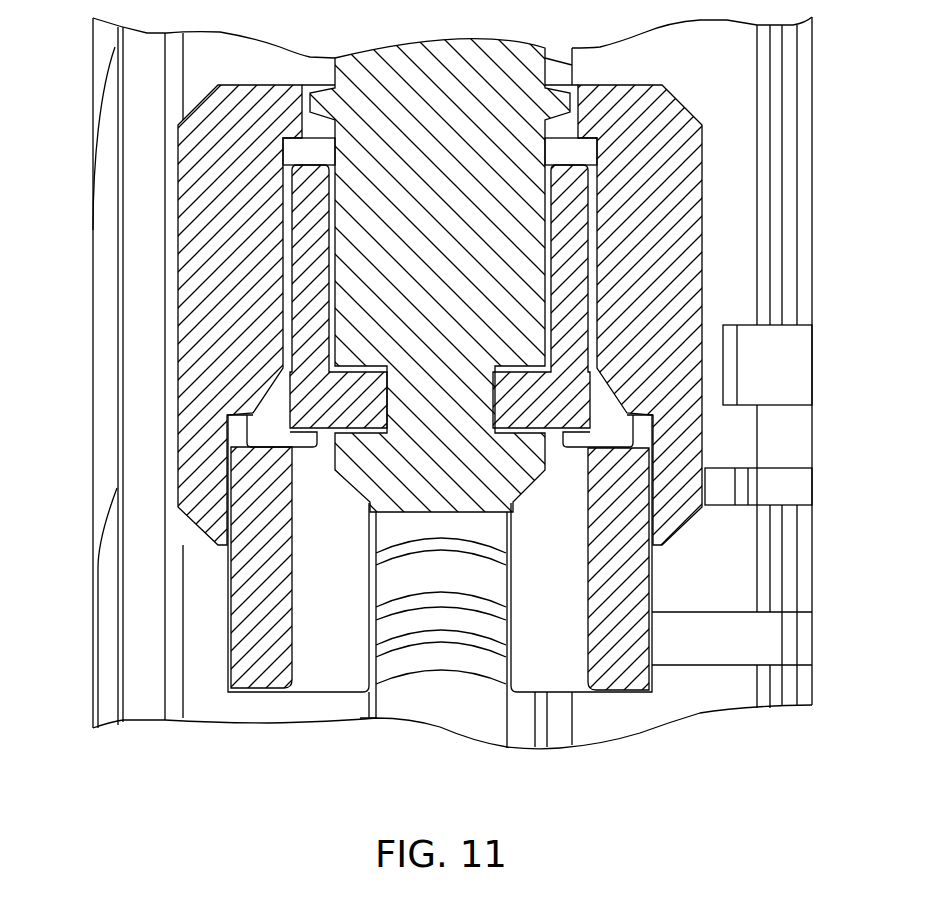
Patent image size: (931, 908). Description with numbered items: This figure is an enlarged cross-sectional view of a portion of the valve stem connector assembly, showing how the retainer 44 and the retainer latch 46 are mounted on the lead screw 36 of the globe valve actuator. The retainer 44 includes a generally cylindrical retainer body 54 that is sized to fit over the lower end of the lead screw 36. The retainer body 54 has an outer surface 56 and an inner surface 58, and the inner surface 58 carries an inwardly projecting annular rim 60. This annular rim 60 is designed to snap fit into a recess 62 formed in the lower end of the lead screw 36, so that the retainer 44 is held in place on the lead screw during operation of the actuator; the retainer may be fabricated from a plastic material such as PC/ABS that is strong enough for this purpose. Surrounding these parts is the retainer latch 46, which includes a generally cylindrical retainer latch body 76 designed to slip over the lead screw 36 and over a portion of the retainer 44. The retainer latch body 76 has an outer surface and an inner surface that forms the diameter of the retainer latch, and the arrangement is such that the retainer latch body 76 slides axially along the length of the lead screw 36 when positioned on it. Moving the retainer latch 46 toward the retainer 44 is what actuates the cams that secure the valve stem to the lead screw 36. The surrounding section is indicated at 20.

The housing 20 is at (140, 598).
The lead screw 36 is at (492, 240).
The retainer 44 is at (227, 600).
The retainer latch 46 is at (700, 117).
The retainer body 54 is at (630, 573).
The outer surface 56 is at (230, 660).
The inner surface 58 is at (293, 632).
The annular rim 60 is at (540, 403).
The recess 62 is at (368, 378).
The retainer latch body 76 is at (207, 222).